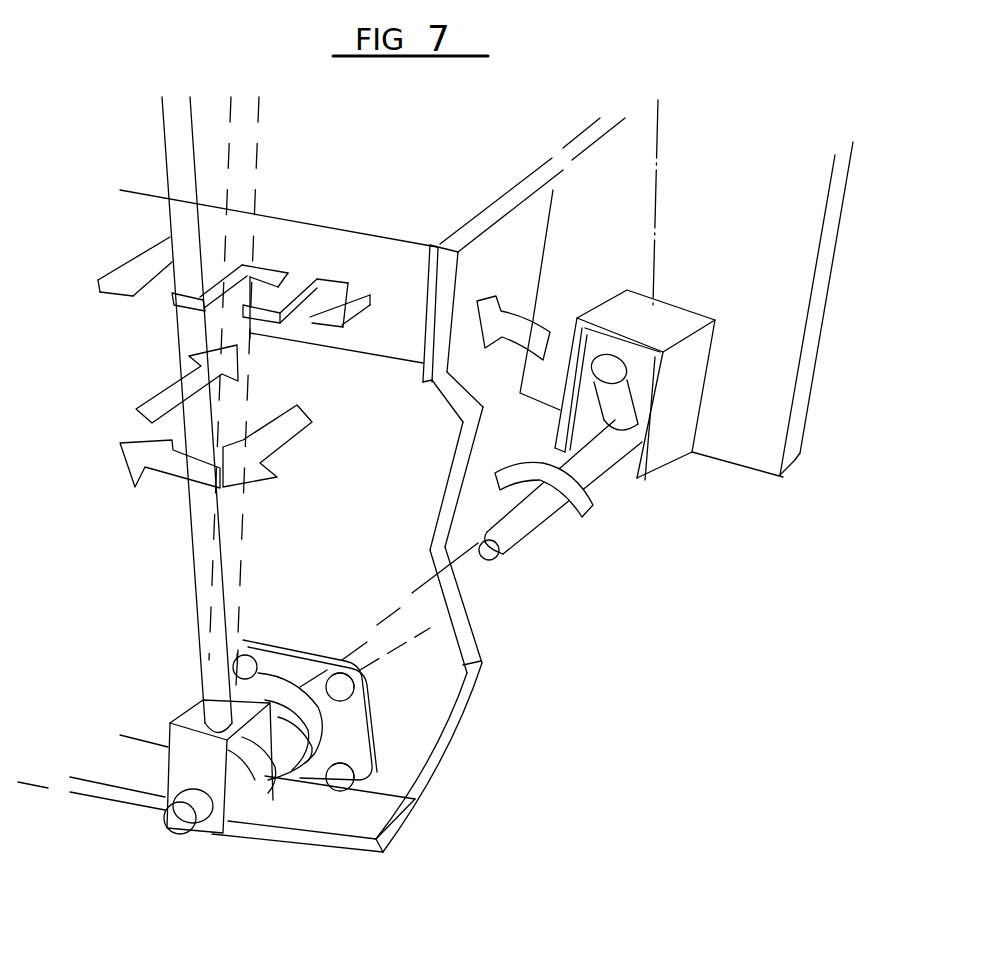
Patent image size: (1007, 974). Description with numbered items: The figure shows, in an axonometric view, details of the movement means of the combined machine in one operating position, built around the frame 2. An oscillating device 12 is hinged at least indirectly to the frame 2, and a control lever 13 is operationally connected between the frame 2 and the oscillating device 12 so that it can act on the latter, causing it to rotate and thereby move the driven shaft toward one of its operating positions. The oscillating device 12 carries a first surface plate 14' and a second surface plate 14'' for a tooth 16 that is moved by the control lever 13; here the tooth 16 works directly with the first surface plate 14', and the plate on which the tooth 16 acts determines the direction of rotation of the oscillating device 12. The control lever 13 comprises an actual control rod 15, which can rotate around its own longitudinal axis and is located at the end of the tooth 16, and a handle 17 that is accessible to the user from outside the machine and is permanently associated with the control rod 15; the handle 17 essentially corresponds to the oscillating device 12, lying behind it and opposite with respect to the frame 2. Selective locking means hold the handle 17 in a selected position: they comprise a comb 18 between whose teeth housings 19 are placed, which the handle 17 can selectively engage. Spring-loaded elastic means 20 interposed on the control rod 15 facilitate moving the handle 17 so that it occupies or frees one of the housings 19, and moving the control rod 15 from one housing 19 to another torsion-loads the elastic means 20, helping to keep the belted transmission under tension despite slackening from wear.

The frame 2 is at (428, 730).
The oscillating device 12 is at (810, 265).
The control lever 13 is at (604, 552).
The first surface plate 14' is at (669, 418).
The second surface plate 14'' is at (552, 300).
The control rod 15 is at (540, 537).
The tooth 16 is at (622, 370).
The handle 17 is at (170, 163).
The comb 18 is at (137, 267).
The housings 19 is at (155, 293).
The spring-loaded elastic means 20 is at (270, 760).